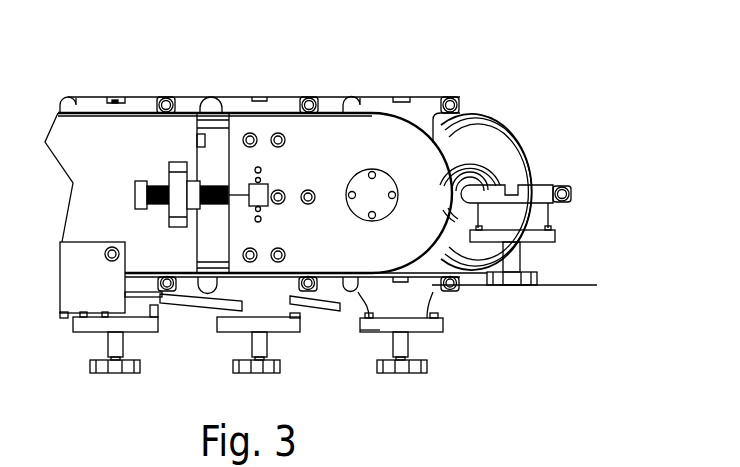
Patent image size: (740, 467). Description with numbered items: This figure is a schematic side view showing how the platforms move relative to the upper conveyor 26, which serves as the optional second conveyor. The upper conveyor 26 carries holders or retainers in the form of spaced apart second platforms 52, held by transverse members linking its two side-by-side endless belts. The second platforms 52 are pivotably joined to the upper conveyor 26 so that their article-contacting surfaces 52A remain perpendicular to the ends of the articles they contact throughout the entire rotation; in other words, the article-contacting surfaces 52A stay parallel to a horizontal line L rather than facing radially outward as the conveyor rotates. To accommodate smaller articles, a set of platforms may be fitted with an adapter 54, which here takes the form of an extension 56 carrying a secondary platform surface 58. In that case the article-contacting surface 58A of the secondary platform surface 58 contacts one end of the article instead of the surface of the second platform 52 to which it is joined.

The upper conveyor 26 is at (468, 66).
The second platforms 52 is at (548, 238).
The article-contacting surfaces 52A is at (367, 335).
The adapter 54 is at (454, 357).
The extension 56 is at (392, 340).
The secondary platform surface 58 is at (537, 281).
The article-contacting surface 58A is at (517, 286).
The horizontal line L is at (568, 286).